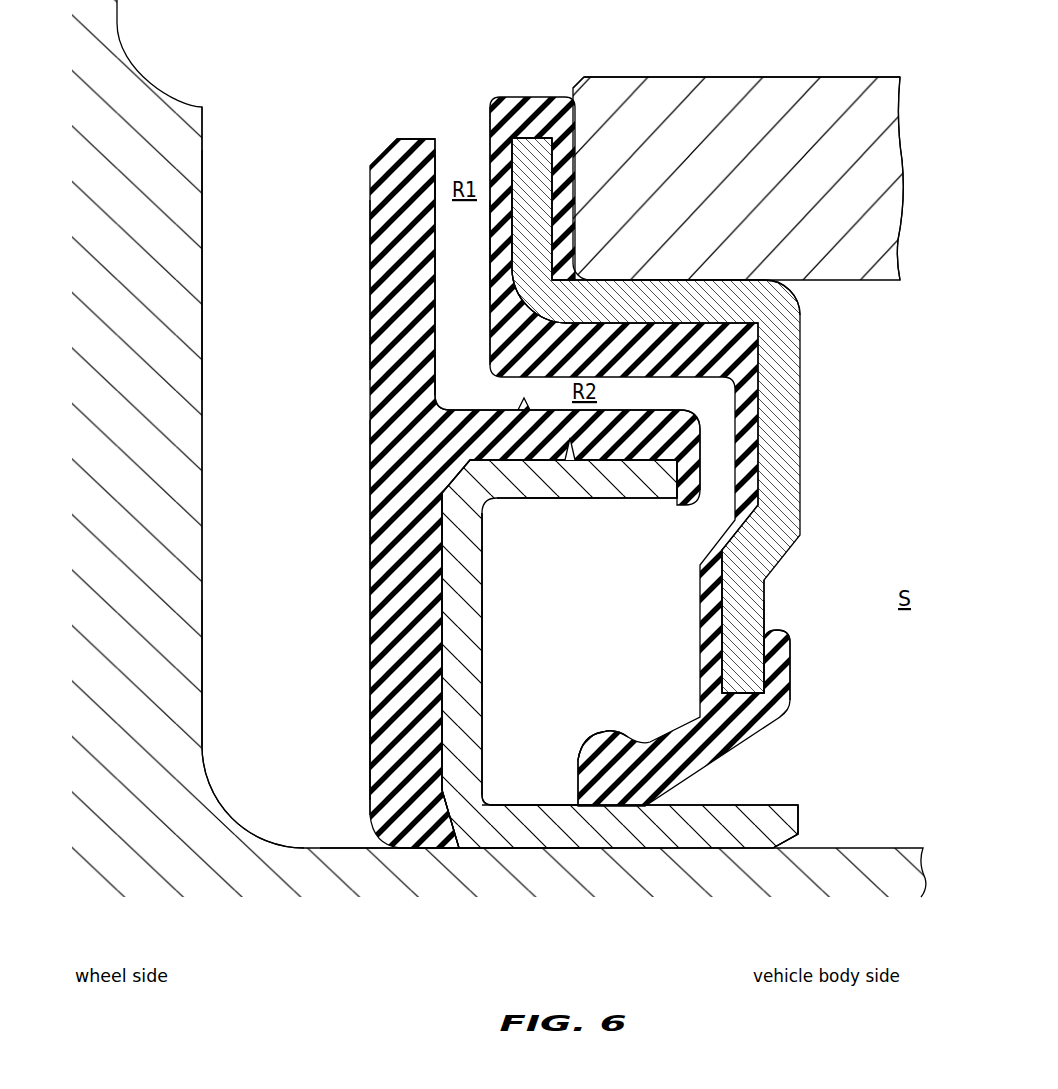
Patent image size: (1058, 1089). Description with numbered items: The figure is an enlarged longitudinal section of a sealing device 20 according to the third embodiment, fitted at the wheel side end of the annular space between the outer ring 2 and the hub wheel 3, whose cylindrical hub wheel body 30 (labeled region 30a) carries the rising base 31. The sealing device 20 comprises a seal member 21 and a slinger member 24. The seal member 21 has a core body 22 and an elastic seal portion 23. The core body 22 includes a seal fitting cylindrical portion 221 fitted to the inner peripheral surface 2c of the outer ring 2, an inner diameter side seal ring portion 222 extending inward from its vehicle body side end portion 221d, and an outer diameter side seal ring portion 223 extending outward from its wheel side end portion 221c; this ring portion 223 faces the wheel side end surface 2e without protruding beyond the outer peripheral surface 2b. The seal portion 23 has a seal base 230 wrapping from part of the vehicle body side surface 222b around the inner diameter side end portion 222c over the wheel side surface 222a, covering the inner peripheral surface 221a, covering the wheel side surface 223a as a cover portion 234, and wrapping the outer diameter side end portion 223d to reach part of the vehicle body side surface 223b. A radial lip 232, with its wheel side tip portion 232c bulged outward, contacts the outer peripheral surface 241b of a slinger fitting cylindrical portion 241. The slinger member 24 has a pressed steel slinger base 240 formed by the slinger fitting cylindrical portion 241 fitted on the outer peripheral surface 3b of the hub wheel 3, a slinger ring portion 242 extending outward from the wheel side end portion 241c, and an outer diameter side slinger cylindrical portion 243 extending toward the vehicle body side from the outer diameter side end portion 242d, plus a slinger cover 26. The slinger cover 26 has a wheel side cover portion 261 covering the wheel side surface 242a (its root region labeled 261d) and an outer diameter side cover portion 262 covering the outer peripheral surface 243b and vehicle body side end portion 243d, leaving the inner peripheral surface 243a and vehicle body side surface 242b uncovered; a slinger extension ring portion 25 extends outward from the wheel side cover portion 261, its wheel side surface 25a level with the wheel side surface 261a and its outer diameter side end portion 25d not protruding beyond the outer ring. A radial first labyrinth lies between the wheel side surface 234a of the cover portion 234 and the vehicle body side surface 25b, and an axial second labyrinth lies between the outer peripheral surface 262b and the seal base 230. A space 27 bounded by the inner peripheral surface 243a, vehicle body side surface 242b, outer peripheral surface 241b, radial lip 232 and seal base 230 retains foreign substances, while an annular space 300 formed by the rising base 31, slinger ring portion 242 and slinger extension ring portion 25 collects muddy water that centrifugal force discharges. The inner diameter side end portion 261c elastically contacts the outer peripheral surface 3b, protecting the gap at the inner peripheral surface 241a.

The outer ring 2 is at (830, 95).
The outer peripheral surface of the outer ring 2b is at (735, 77).
The inner peripheral surface of the outer ring 2c is at (872, 283).
The wheel side end surface of the outer ring 2e is at (568, 98).
The hub wheel 3 is at (328, 890).
The outer peripheral surface of the hub wheel 3b is at (330, 846).
The sealing device 20 is at (362, 48).
The seal member 21 is at (882, 372).
The core body 22 is at (806, 394).
The seal portion 23 is at (758, 447).
The slinger member 24 is at (293, 500).
The slinger extension ring portion 25 is at (400, 243).
The wheel side surface of the slinger extension ring portion 25a is at (374, 370).
The vehicle body side surface of the slinger extension ring portion 25b is at (432, 160).
The outer diameter side end portion of the slinger extension ring portion 25d is at (405, 139).
The slinger cover 26 is at (362, 582).
The space 27 is at (551, 659).
The hub wheel body 30 is at (270, 888).
The shaft surface 30a is at (200, 892).
The rising base 31 is at (183, 258).
The seal fitting cylindrical portion 221 is at (657, 300).
The inner peripheral surface of the seal fitting cylindrical portion 221a is at (683, 323).
The wheel side end portion of the seal fitting cylindrical portion 221c is at (545, 298).
The vehicle body side end portion of the seal fitting cylindrical portion 221d is at (768, 312).
The inner diameter side seal ring portion 222 is at (768, 550).
The wheel side surface of the inner diameter side seal ring portion 222a is at (720, 603).
The vehicle body side surface of the inner diameter side seal ring portion 222b is at (782, 640).
The inner diameter side end portion of the inner diameter side seal ring portion 222c is at (752, 730).
The outer diameter side seal ring portion 223 is at (530, 215).
The wheel side surface of the outer diameter side seal ring portion 223a is at (495, 222).
The vehicle body side surface of the outer diameter side seal ring portion 223b is at (557, 170).
The outer diameter side end portion of the outer diameter side seal ring portion 223d is at (515, 97).
The seal base 230 is at (792, 673).
The radial lip 232 is at (580, 770).
The wheel side tip portion of the radial lip 232c is at (603, 733).
The cover portion 234 is at (500, 160).
The wheel side surface of the cover portion 234a is at (492, 262).
The slinger base 240 is at (438, 546).
The slinger fitting cylindrical portion 241 is at (585, 850).
The inner peripheral surface of the slinger fitting cylindrical portion 241a is at (682, 850).
The outer peripheral surface of the slinger fitting cylindrical portion 241b is at (546, 804).
The wheel side end portion of the slinger fitting cylindrical portion 241c is at (466, 827).
The slinger ring portion 242 is at (410, 650).
The wheel side surface of the slinger ring portion 242a is at (440, 600).
The vehicle body side surface of the slinger ring portion 242b is at (483, 650).
The outer diameter side end portion of the slinger ring portion 242d is at (465, 490).
The outer diameter side slinger cylindrical portion 243 is at (597, 487).
The inner peripheral surface of the outer diameter side slinger cylindrical portion 243a is at (530, 500).
The outer peripheral surface of the outer diameter side slinger cylindrical portion 243b is at (570, 447).
The vehicle body side end portion of the outer diameter side slinger cylindrical por 243d is at (700, 478).
The wheel side cover portion 261 is at (415, 677).
The wheel side surface of the wheel side cover portion 261a is at (370, 742).
The inner diameter side end portion of the wheel side cover portion 261c is at (420, 850).
The root of lip 261d is at (422, 447).
The outer diameter side cover portion 262 is at (640, 447).
The outer peripheral surface of the outer diameter side cover portion 262b is at (522, 412).
The annular space 300 is at (350, 293).